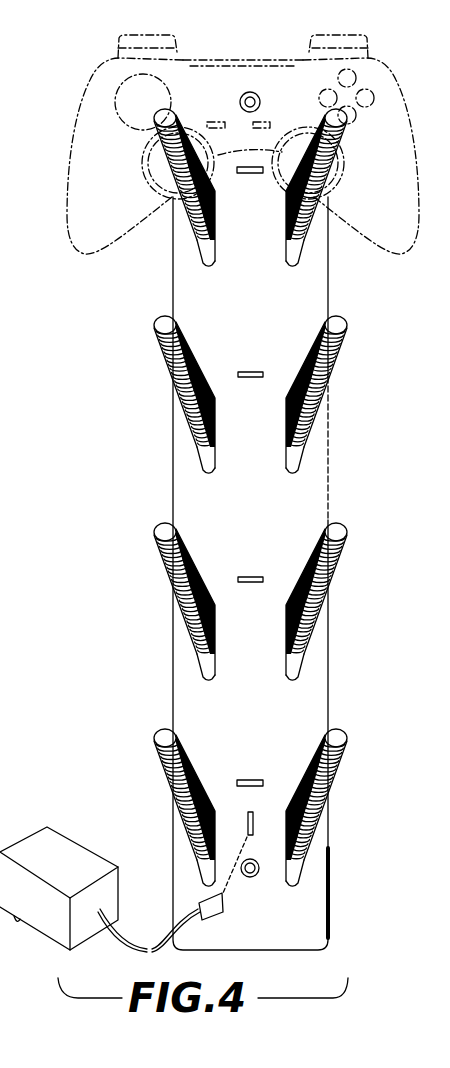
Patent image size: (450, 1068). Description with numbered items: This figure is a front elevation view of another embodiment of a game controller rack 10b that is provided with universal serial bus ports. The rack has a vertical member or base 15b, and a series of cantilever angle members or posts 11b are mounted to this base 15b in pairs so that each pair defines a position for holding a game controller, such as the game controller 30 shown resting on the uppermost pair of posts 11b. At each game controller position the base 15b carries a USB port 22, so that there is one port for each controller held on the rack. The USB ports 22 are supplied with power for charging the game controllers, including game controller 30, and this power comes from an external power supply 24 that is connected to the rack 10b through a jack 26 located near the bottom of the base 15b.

The game controller 30 is at (375, 68).
The charging station 10b is at (252, 529).
The cantilever angle members or posts 11b is at (166, 322).
The vertical member or base 15b is at (328, 467).
The USB ports 22 is at (256, 370).
The power supply 24 is at (58, 845).
The jack 26 is at (257, 818).